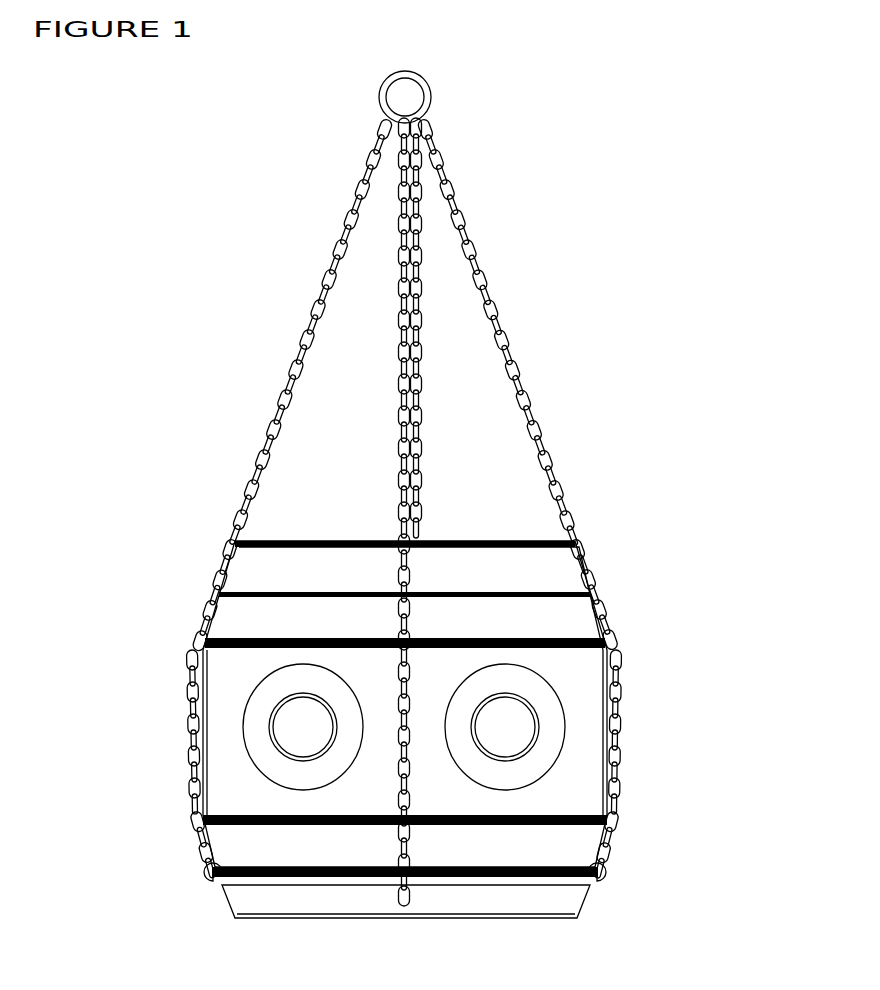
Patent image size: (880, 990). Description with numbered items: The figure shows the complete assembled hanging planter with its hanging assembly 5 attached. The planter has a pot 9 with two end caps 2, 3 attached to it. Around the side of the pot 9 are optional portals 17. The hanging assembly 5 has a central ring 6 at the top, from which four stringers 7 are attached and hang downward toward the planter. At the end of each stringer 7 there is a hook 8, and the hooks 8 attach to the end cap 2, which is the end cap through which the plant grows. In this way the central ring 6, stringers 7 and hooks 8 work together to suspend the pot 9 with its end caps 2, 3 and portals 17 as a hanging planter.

The central ring 6 is at (436, 96).
The hanging assembly 5 is at (198, 288).
The stringer 7 is at (518, 353).
The end cap 3 is at (273, 567).
The pot 9 is at (578, 777).
The portals 17 is at (268, 729).
The end cap 2 is at (272, 903).
The hook 8 is at (603, 892).